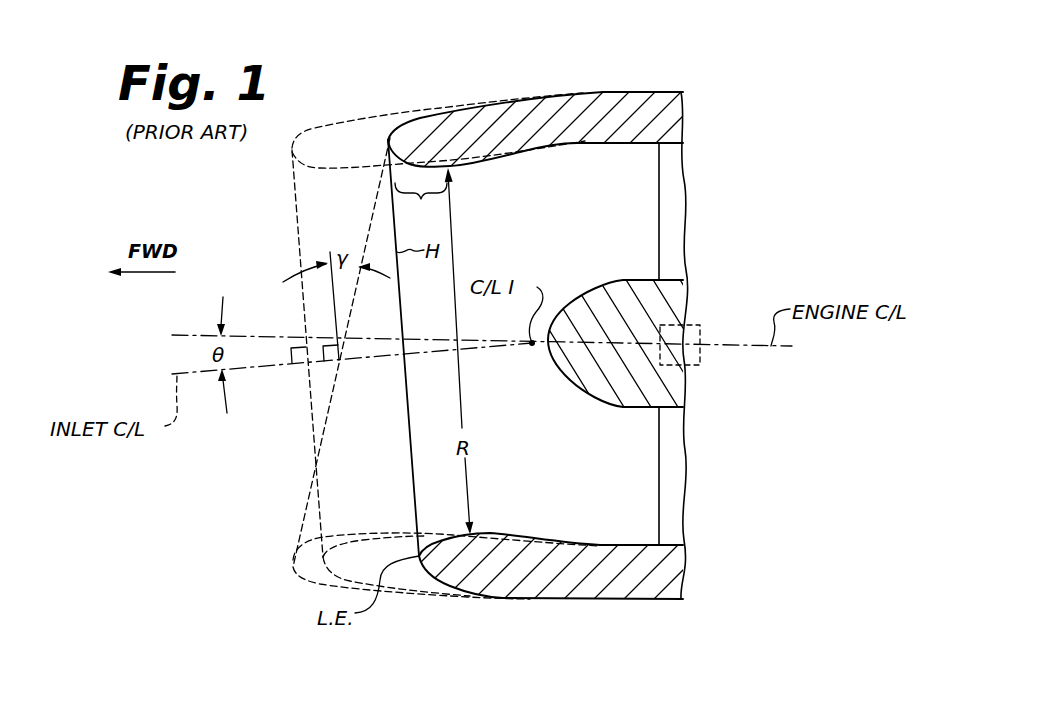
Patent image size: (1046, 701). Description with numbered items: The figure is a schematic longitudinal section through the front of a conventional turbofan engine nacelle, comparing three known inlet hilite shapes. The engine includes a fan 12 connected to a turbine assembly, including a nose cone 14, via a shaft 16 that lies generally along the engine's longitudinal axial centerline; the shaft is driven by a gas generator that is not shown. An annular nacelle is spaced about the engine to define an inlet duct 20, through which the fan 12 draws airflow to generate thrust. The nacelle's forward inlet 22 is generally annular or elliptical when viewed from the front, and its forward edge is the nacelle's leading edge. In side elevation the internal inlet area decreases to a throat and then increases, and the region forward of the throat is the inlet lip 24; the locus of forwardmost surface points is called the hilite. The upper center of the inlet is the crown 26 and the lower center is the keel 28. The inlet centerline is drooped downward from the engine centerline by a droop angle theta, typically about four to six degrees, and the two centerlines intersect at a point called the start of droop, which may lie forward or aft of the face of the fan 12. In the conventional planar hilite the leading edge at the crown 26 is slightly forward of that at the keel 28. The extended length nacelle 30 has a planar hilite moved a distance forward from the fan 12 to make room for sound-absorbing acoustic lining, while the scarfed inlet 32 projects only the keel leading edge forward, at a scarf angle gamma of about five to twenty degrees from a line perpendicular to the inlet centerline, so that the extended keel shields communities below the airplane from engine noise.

The fan 12 is at (665, 222).
The nose cone 14 is at (597, 288).
The shaft 16 is at (703, 325).
The inlet duct 20 is at (623, 485).
The forward inlet 22 is at (591, 40).
The inlet lip 24 is at (421, 205).
The crown 26 is at (460, 110).
The keel 28 is at (472, 582).
The extended length nacelle 30 is at (292, 193).
The scarfed inlet 32 is at (293, 522).